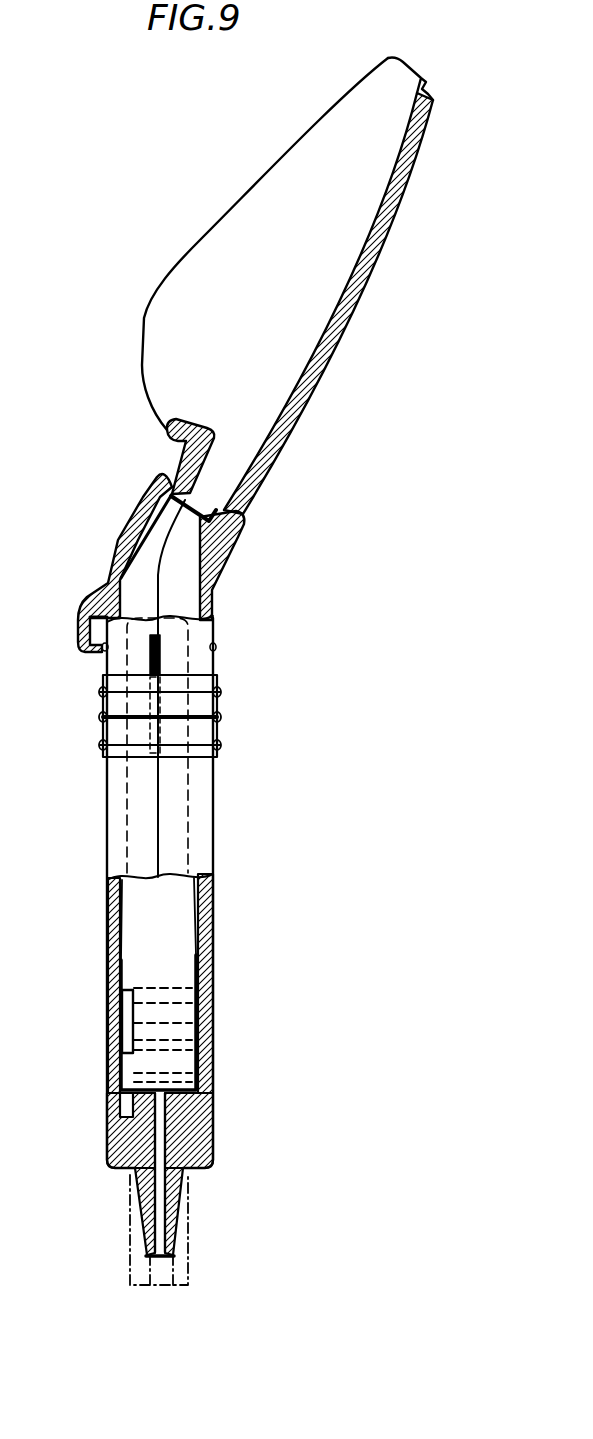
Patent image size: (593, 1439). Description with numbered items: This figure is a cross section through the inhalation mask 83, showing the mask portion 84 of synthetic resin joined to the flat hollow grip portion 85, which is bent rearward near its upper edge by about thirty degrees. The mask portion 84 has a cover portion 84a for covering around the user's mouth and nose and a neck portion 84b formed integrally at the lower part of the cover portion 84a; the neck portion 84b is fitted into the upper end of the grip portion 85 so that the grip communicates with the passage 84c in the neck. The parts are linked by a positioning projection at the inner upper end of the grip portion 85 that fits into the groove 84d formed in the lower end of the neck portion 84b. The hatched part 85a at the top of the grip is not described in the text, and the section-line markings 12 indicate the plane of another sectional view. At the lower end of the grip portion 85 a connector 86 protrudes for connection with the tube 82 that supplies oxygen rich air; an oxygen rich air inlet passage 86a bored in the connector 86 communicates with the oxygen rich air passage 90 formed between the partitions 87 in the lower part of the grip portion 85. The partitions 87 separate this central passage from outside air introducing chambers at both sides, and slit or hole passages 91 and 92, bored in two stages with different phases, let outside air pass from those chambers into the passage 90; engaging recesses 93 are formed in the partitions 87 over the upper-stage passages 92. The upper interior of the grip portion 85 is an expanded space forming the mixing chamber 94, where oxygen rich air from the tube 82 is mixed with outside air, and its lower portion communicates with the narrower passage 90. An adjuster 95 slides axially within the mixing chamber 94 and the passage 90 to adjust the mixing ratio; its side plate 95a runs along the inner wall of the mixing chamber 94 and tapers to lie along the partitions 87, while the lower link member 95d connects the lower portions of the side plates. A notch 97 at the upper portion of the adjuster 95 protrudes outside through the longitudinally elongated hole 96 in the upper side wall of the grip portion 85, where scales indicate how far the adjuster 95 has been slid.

The section line 12 is at (153, 462).
The tube 82 is at (178, 1268).
The inhalation mask 83 is at (220, 105).
The mask portion 84 is at (378, 285).
The cover portion 84a is at (182, 262).
The neck portion 84b is at (190, 460).
The passage 84c is at (228, 478).
The groove 84d is at (212, 515).
The grip portion 85 is at (218, 806).
The holder projection 85a is at (205, 518).
The connector 86 is at (147, 1218).
The oxygen rich air inlet passage 86a is at (163, 1220).
The partitions 87 is at (213, 990).
The oxygen rich air passage 90 is at (120, 1112).
The slit or hole passage 91 is at (118, 1090).
The slit or hole passage 92 is at (187, 1048).
The engaging recesses 93 is at (190, 1019).
The mixing chamber 94 is at (196, 883).
The adjuster 95 is at (120, 892).
The side plate 95a is at (178, 917).
The lower link member 95d is at (127, 1032).
The longitudinally elongated hole 96 is at (160, 661).
The notch 97 is at (203, 706).